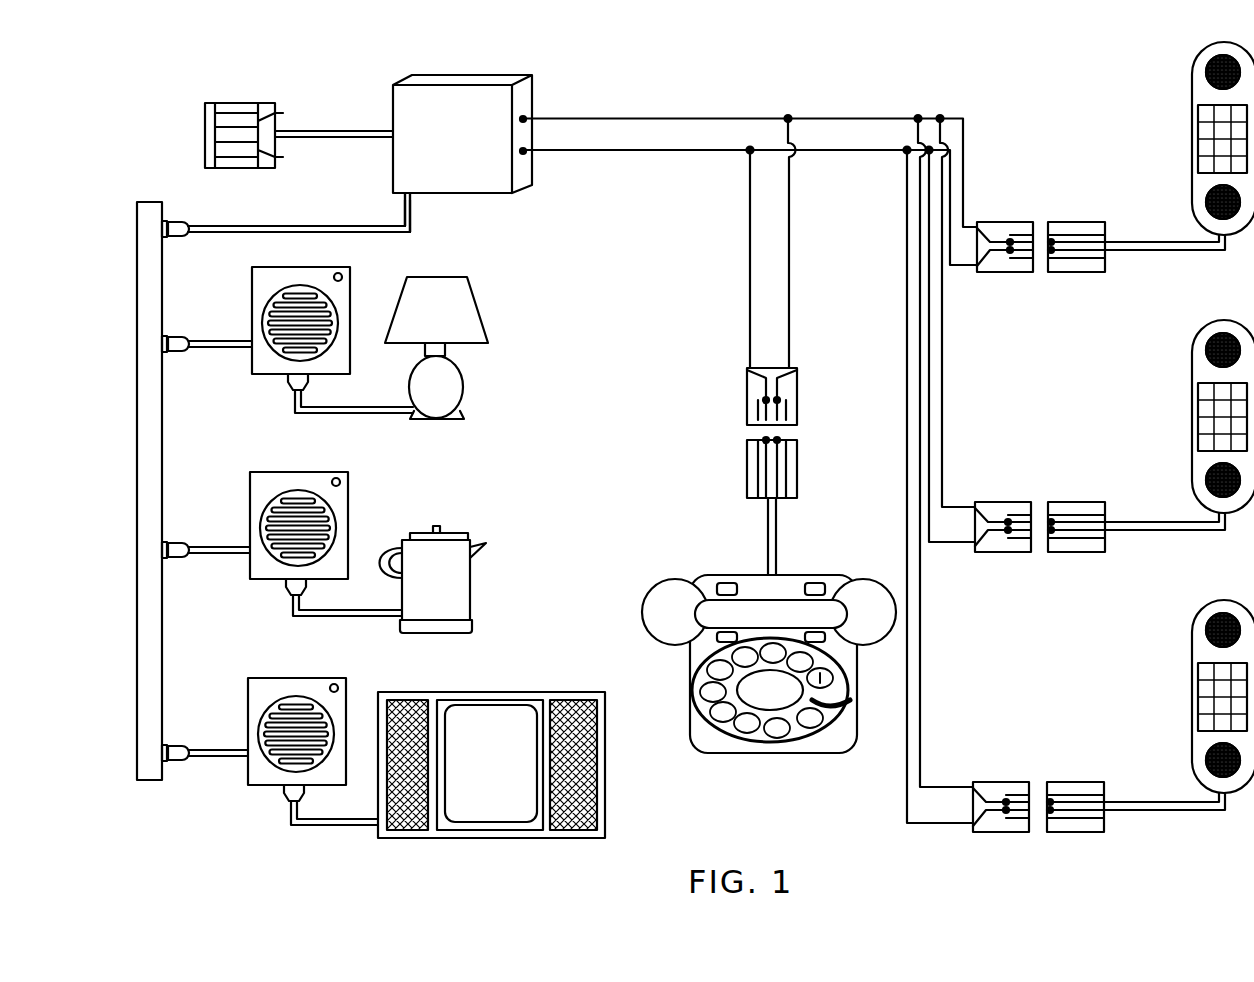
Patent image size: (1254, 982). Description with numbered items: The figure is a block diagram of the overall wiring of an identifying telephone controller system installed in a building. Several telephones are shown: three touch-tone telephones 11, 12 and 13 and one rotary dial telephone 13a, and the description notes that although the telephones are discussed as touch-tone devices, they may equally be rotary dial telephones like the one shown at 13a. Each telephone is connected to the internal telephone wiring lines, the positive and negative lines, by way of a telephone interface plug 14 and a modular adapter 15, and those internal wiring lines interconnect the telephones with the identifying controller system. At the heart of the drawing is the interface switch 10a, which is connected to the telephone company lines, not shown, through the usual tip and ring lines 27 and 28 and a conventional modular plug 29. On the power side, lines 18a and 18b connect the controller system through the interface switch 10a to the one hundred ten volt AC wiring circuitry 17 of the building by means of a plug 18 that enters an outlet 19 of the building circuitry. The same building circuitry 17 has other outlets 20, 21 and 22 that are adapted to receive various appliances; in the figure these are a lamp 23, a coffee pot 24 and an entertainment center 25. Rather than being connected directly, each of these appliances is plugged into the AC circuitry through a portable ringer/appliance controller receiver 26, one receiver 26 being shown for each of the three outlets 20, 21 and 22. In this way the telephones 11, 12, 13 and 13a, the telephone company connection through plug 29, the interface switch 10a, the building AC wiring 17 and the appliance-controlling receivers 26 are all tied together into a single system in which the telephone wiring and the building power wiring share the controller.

The interface switch 10a is at (488, 178).
The touch-tone telephone 11 is at (1200, 93).
The touch-tone telephone 12 is at (1200, 371).
The touch-tone telephone 13 is at (1200, 656).
The rotary dial telephone 13a is at (700, 659).
The telephone interface plug 14 is at (1090, 275).
The modular adapter 15 is at (1005, 275).
The 110 v AC wiring circuitry 17 is at (148, 206).
The plug 18 is at (218, 226).
The line 18a is at (400, 227).
The line 18b is at (418, 222).
The outlet 19 is at (165, 240).
The outlet 20 is at (165, 355).
The outlet 21 is at (165, 561).
The outlet 22 is at (165, 764).
The lamp 23 is at (455, 386).
The coffee pot 24 is at (458, 593).
The entertainment center 25 is at (605, 773).
The portable ringer/appliance controller receiver 26 is at (274, 368).
The tip line 27 is at (345, 131).
The ring line 28 is at (345, 138).
The modular plug 29 is at (208, 148).